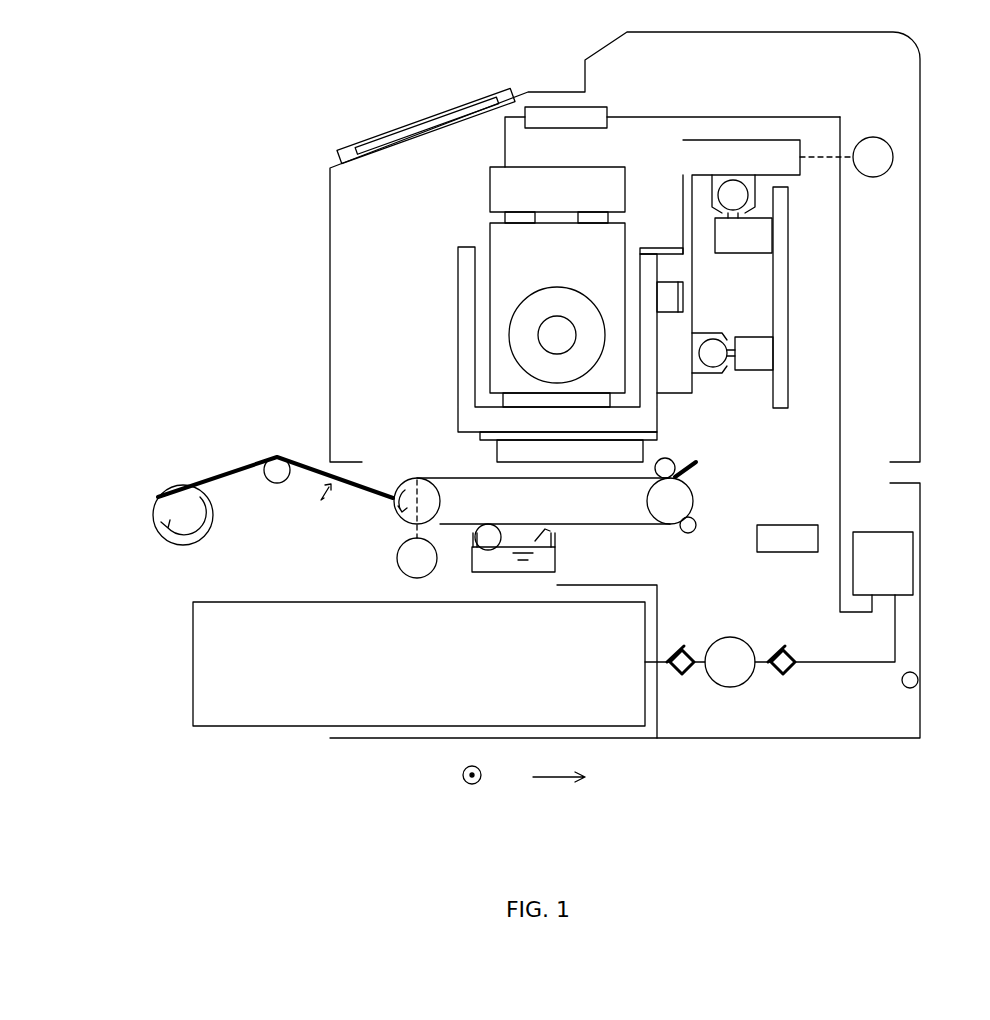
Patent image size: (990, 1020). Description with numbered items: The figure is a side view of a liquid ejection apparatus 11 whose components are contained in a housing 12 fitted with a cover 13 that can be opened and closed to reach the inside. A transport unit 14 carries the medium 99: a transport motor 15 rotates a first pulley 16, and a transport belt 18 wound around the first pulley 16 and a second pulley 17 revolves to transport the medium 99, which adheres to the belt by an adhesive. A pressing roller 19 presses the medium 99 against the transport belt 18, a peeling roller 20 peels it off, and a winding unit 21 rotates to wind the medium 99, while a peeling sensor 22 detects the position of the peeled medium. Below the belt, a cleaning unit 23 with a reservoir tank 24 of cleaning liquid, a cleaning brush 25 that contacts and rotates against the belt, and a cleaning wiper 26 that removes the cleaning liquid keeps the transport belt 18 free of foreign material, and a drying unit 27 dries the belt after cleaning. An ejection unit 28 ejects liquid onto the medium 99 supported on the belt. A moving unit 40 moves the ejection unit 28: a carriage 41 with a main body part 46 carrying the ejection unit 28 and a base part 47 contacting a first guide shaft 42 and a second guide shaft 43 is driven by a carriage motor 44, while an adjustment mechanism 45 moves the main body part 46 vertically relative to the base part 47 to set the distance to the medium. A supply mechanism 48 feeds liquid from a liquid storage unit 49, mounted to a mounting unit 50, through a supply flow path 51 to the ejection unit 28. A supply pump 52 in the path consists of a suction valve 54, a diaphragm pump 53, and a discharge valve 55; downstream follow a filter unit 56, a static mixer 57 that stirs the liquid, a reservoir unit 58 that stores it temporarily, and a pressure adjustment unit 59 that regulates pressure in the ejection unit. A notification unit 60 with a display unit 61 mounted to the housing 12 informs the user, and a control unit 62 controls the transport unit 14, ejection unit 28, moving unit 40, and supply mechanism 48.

The liquid ejection apparatus 11 is at (370, 92).
The housing 12 is at (920, 259).
The cover 13 is at (920, 506).
The transport unit 14 is at (421, 510).
The transport motor 15 is at (397, 558).
The first pulley 16 is at (440, 508).
The second pulley 17 is at (693, 497).
The transport belt 18 is at (575, 524).
The pressing roller 19 is at (680, 459).
The peeling roller 20 is at (277, 484).
The winding unit 21 is at (153, 518).
The peeling sensor 22 is at (318, 513).
The cleaning unit 23 is at (510, 598).
The reservoir tank 24 is at (478, 572).
The cleaning brush 25 is at (505, 548).
The cleaning wiper 26 is at (537, 585).
The drying unit 27 is at (688, 533).
The ejection unit 28 is at (645, 455).
The moving unit 40 is at (787, 424).
The carriage 41 is at (720, 214).
The first guide shaft 42 is at (736, 205).
The second guide shaft 43 is at (713, 345).
The carriage motor 44 is at (873, 178).
The adjustment mechanism 45 is at (668, 300).
The main body part 46 is at (663, 248).
The base part 47 is at (658, 70).
The supply mechanism 48 is at (847, 86).
The liquid storage unit 49 is at (193, 664).
The mounting unit 50 is at (657, 614).
The supply flow path 51 is at (840, 306).
The supply pump 52 is at (781, 705).
The diaphragm pump 53 is at (731, 687).
The suction valve 54 is at (686, 676).
The discharge valve 55 is at (783, 712).
The filter unit 56 is at (913, 563).
The static mixer 57 is at (607, 107).
The reservoir unit 58 is at (490, 190).
The pressure adjustment unit 59 is at (490, 233).
The notification unit 60 is at (417, 101).
The display unit 61 is at (457, 104).
The control unit 62 is at (785, 525).
The medium 99 is at (232, 466).